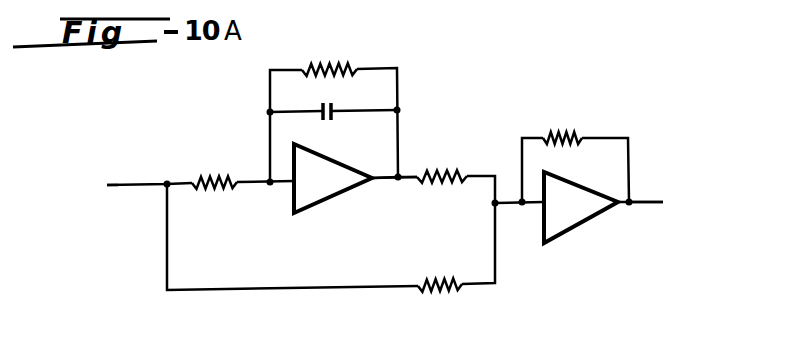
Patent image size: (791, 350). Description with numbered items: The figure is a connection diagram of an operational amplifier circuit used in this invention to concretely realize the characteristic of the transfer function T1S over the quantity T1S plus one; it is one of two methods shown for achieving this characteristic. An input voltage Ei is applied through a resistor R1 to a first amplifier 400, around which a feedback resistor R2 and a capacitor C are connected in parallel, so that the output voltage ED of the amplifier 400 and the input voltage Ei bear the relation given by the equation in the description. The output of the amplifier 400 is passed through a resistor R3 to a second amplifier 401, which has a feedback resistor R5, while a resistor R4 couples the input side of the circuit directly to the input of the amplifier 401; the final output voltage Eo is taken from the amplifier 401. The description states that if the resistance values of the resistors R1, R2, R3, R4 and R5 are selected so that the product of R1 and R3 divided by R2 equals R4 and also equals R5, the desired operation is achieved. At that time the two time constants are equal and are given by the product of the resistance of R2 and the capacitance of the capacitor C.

The amplifier 400 is at (336, 196).
The second operational amplifier 401 is at (574, 232).
The resistor R'1 R1 is at (219, 176).
The resistor R'2 R2 is at (327, 63).
The resistor R'3 R3 is at (436, 170).
The resistor R'4 R4 is at (449, 290).
The resistor R'5 R5 is at (562, 132).
The capacitor C' C is at (336, 108).
The input voltage Ei is at (117, 170).
The output voltage E'0 ED is at (404, 180).
The output voltage Eo is at (646, 221).